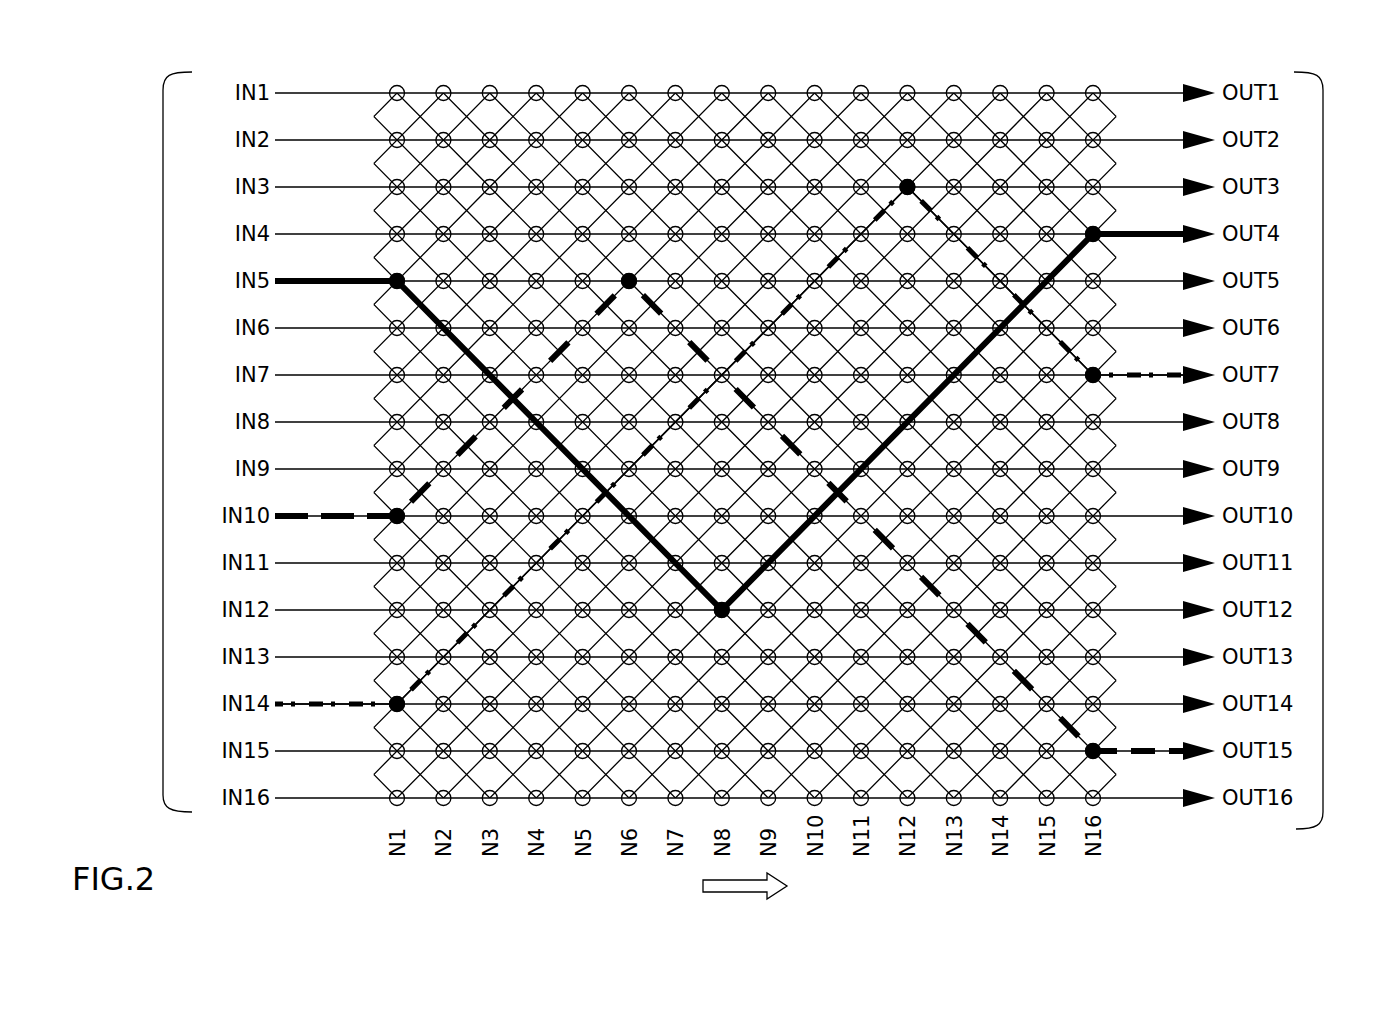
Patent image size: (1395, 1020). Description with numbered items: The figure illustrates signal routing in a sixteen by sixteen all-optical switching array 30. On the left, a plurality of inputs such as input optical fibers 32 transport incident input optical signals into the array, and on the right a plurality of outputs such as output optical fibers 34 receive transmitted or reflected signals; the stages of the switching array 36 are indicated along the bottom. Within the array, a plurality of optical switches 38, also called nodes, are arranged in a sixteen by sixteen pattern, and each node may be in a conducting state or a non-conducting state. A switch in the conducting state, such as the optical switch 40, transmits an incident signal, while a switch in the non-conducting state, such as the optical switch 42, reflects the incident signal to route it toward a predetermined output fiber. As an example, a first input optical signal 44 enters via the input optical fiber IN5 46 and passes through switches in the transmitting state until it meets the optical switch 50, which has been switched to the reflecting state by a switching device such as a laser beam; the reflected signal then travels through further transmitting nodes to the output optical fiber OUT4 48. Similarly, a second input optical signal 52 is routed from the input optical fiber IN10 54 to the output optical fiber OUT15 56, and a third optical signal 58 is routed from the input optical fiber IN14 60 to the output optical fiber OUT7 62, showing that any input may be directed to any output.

The all-optical switching array 30 is at (1266, 872).
The input optical fibers 32 is at (163, 445).
The output optical fibers 34 is at (1323, 445).
The stages of the switching array 36 is at (703, 886).
The optical switches 38 is at (397, 85).
The optical switch in a conducting state 40 is at (631, 85).
The optical switch in a non-conducting state 42 is at (908, 186).
The first input optical signal 44 is at (395, 279).
The input optical fiber IN5 46 is at (275, 281).
The output optical fiber OUT4 48 is at (1170, 241).
The optical switch 50 is at (724, 612).
The second input optical signal 52 is at (397, 516).
The input optical fiber IN10 54 is at (275, 516).
The output optical fiber OUT15 56 is at (1178, 760).
The third optical signal 58 is at (397, 704).
The input optical fiber IN14 60 is at (275, 704).
The output optical fiber OUT7 62 is at (1183, 380).